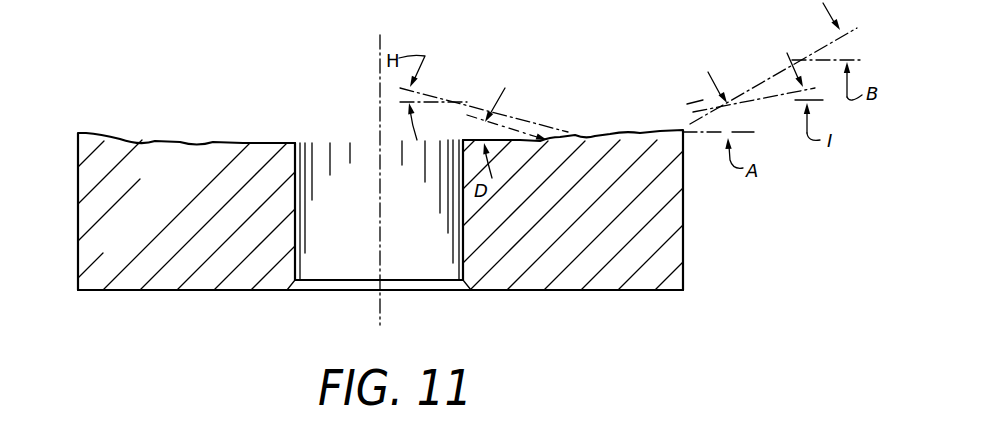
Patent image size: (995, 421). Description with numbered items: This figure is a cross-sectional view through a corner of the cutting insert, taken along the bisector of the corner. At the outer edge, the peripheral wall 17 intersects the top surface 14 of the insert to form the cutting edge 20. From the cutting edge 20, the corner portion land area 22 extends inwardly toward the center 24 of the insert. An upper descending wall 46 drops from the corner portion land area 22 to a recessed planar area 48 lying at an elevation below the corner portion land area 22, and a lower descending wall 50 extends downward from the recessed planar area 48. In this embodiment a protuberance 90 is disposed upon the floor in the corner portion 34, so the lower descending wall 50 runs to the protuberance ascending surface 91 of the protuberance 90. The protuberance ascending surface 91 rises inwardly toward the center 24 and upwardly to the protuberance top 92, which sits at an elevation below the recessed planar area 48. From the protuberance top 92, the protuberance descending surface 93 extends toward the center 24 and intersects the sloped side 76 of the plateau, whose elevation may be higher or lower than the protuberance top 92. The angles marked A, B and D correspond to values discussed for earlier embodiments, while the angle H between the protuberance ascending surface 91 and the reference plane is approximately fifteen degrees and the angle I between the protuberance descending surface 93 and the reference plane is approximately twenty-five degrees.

The top surface 14 is at (533, 74).
The peripheral wall 17 is at (683, 225).
The cutting edge 20 is at (700, 134).
The corner portion land area 22 is at (682, 132).
The center of the insert 24 is at (378, 126).
The corner portion 34 is at (773, 141).
The upper descending wall 46 is at (663, 133).
The recessed planar area 48 is at (657, 128).
The lower descending wall 50 is at (622, 133).
The sloped side of the plateau 76 is at (573, 141).
The protuberance 90 is at (595, 134).
The protuberance ascending surface 91 is at (618, 128).
The protuberance top 92 is at (580, 133).
The protuberance descending surface 93 is at (563, 135).